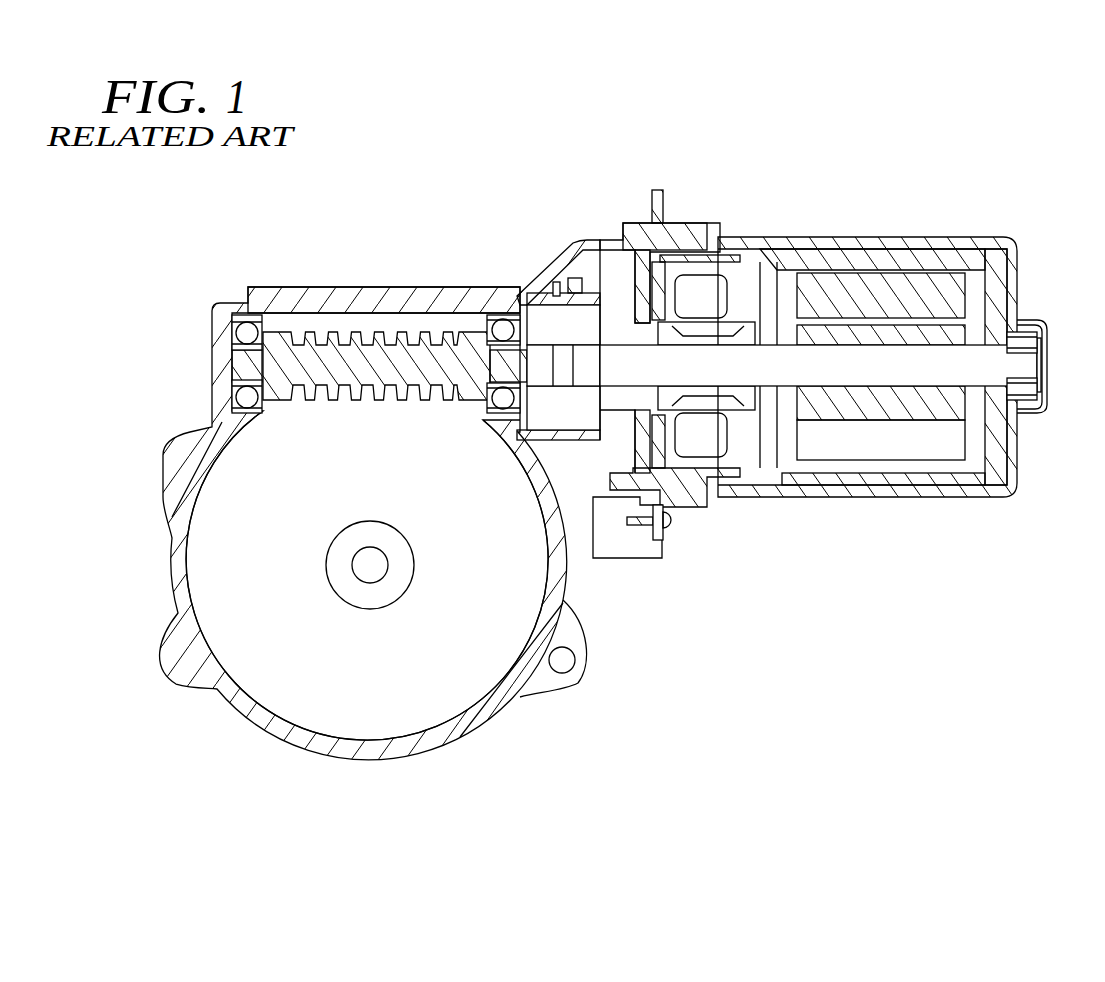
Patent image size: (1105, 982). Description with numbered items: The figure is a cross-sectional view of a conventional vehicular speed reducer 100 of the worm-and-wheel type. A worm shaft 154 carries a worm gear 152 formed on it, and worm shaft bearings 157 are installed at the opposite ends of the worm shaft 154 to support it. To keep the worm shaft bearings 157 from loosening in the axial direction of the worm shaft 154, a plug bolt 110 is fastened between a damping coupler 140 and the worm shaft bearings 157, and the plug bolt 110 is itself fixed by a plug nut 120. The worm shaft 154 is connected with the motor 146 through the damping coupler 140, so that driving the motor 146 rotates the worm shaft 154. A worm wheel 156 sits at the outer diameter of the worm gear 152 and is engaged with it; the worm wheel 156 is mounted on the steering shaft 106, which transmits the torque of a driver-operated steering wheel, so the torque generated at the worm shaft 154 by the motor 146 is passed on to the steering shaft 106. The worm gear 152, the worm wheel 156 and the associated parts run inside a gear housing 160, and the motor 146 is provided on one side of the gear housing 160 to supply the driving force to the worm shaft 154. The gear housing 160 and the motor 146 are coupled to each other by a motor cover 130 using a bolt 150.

The vehicular speed reducer 100 is at (726, 120).
The steering shaft 106 is at (371, 575).
The plug bolt 110 is at (560, 292).
The plug nut 120 is at (573, 260).
The motor cover 130 is at (682, 223).
The damping coupler 140 is at (587, 415).
The motor 146 is at (825, 240).
The bolt 150 is at (673, 524).
The worm gear 152 is at (312, 330).
The worm shaft 154 is at (213, 368).
The worm wheel 156 is at (448, 700).
The worm shaft bearings 157 is at (246, 321).
The gear housing 160 is at (367, 292).